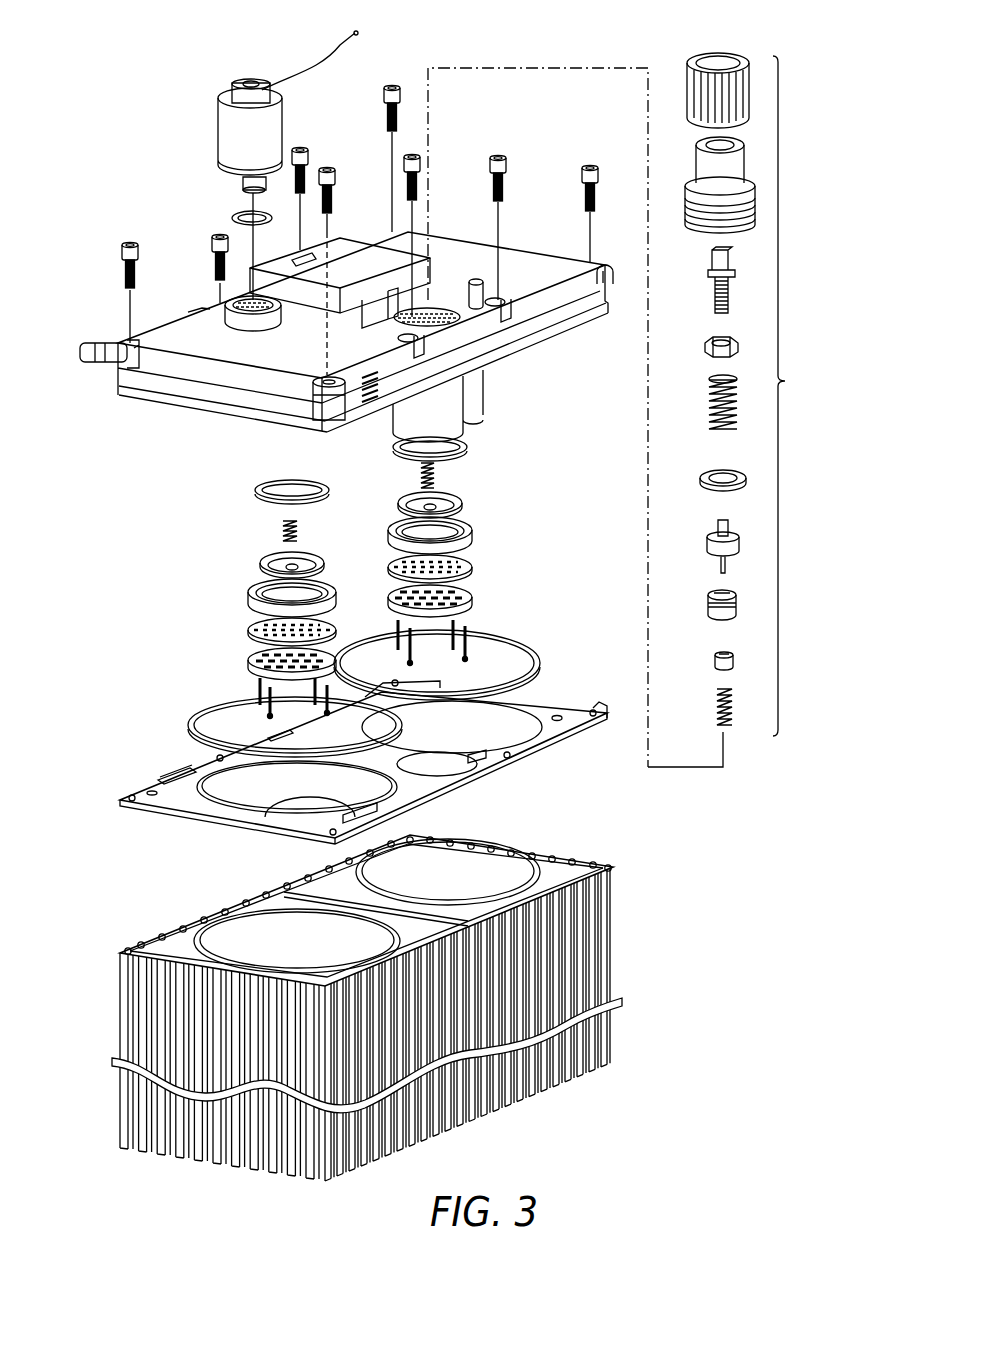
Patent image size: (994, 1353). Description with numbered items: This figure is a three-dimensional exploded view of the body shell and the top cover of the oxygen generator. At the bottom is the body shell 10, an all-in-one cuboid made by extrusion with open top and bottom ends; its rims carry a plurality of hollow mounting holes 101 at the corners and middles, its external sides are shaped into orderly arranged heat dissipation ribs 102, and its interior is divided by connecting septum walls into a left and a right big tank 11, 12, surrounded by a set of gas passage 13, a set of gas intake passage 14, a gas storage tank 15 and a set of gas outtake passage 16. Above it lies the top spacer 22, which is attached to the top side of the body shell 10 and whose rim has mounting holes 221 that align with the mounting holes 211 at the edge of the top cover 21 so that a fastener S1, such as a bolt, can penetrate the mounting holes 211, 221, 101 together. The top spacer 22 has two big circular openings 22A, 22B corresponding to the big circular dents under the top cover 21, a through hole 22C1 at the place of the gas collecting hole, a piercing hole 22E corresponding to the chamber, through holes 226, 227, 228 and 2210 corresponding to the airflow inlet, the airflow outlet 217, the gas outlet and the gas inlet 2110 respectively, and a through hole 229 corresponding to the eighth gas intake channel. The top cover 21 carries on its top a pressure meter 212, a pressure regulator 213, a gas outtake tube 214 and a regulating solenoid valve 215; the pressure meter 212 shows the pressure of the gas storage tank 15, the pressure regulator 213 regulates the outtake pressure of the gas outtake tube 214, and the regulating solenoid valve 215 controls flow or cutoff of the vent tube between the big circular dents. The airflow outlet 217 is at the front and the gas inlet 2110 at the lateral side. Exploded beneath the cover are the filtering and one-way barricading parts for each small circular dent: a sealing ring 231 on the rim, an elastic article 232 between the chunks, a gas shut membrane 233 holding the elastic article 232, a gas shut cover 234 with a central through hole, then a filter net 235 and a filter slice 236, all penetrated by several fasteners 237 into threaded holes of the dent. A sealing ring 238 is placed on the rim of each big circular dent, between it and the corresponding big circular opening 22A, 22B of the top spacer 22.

The body shell 10 is at (623, 944).
The mounting holes 101 is at (270, 878).
The heat dissipation ribs 102 is at (140, 1011).
The big tank 11 is at (230, 937).
The big tank 12 is at (515, 860).
The gas passage 13 is at (247, 965).
The gas intake passage 14 is at (545, 862).
The gas storage tank 15 is at (450, 923).
The gas outtake passage 16 is at (345, 870).
The top cover 21 is at (177, 387).
The mounting holes 211 is at (310, 394).
The gas inlet 2110 is at (613, 283).
The pressure meter 212 is at (368, 258).
The pressure regulator 213 is at (759, 394).
The gas outtake tube 214 is at (470, 290).
The regulating solenoid valve 215 is at (232, 133).
The airflow outlet 217 is at (103, 355).
The top spacer 22 is at (177, 800).
The mounting holes 221 is at (603, 708).
The through hole 2210 is at (560, 719).
The through hole 226 is at (300, 797).
The through hole 227 is at (147, 793).
The through hole 228 is at (168, 774).
The through hole 229 is at (267, 738).
The big circular opening 22A is at (230, 798).
The big circular opening 22B is at (503, 733).
The through hole 22C1 is at (440, 768).
The piercing hole 22E is at (443, 770).
The sealing ring 231 is at (466, 442).
The elastic article 232 is at (440, 475).
The gas shut membrane 233 is at (470, 503).
The gas shut cover 234 is at (478, 531).
The filter net 235 is at (475, 566).
The filter slice 236 is at (477, 597).
The fasteners 237 is at (470, 633).
The sealing ring 238 is at (530, 667).
The fastener S1 is at (124, 265).